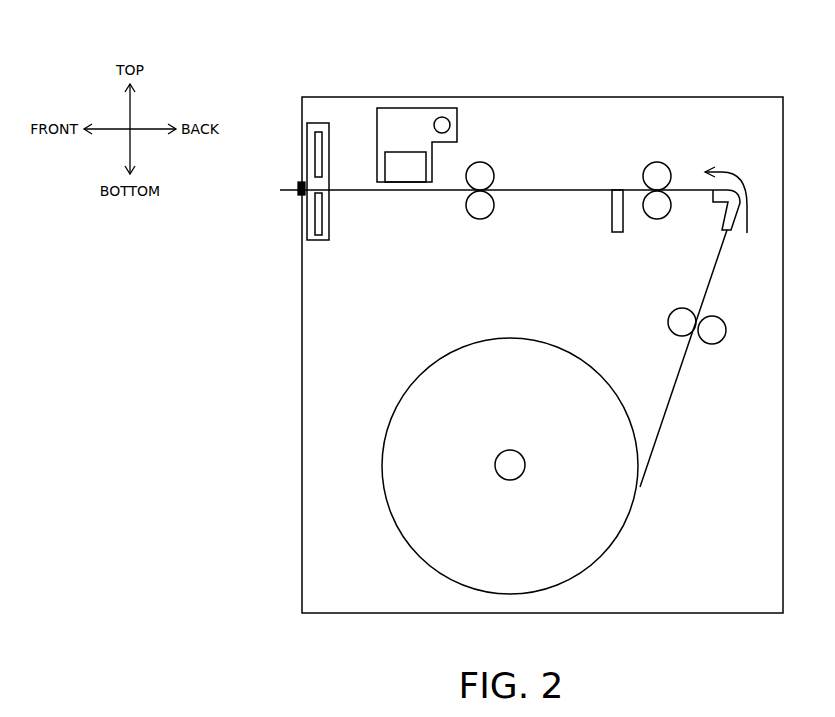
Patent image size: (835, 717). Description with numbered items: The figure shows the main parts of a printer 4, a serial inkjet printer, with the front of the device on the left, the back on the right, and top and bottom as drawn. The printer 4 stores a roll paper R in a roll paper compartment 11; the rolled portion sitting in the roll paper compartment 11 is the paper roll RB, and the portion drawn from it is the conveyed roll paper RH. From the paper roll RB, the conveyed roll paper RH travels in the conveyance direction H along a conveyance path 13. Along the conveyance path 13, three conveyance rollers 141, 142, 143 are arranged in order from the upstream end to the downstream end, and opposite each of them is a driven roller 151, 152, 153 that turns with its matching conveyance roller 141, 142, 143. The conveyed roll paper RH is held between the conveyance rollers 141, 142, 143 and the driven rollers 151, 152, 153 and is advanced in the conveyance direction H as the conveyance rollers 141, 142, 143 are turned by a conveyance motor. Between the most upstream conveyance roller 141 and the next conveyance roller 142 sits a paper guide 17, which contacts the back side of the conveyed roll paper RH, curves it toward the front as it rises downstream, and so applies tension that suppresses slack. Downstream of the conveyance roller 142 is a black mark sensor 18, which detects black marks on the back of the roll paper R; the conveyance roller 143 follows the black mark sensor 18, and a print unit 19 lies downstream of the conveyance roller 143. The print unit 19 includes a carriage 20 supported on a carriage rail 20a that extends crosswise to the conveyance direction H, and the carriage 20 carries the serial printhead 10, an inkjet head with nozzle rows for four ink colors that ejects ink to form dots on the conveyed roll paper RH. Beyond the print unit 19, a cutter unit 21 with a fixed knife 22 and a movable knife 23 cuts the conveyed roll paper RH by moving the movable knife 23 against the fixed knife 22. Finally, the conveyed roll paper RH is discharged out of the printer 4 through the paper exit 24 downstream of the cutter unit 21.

The printer 4 is at (713, 97).
The serial printhead 10 is at (402, 173).
The roll paper compartment 11 is at (410, 377).
The conveyance path 13 is at (675, 390).
The paper guide 17 is at (729, 218).
The black mark sensor 18 is at (618, 233).
The print unit 19 is at (421, 140).
The carriage 20 is at (377, 132).
The carriage rail 20a is at (443, 117).
The cutter unit 21 is at (322, 240).
The fixed knife 22 is at (322, 214).
The movable knife 23 is at (322, 147).
The paper exit 24 is at (300, 195).
The conveyance roller 141 is at (672, 325).
The conveyance roller 142 is at (657, 213).
The conveyance roller 143 is at (484, 213).
The driven roller 151 is at (717, 341).
The driven roller 152 is at (663, 168).
The driven roller 153 is at (483, 167).
The roll paper R is at (500, 435).
The paper roll RB is at (492, 348).
The conveyed roll paper RH is at (667, 418).
The conveyance direction H is at (747, 233).